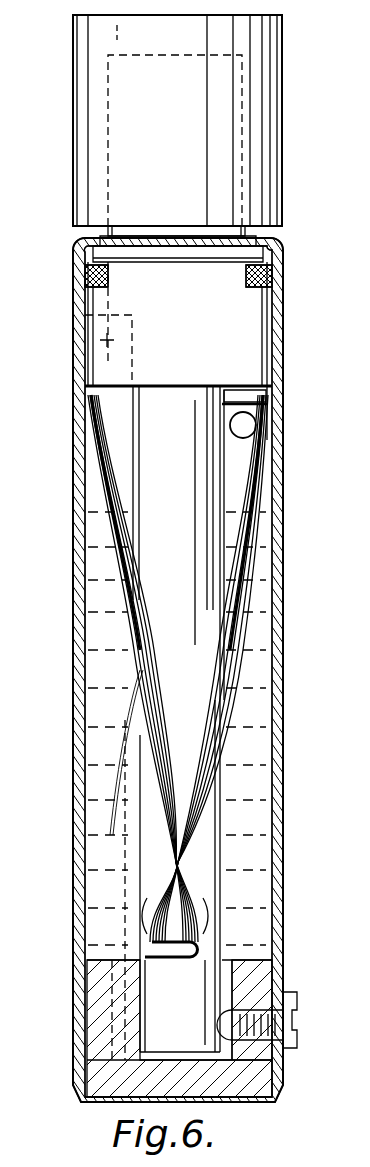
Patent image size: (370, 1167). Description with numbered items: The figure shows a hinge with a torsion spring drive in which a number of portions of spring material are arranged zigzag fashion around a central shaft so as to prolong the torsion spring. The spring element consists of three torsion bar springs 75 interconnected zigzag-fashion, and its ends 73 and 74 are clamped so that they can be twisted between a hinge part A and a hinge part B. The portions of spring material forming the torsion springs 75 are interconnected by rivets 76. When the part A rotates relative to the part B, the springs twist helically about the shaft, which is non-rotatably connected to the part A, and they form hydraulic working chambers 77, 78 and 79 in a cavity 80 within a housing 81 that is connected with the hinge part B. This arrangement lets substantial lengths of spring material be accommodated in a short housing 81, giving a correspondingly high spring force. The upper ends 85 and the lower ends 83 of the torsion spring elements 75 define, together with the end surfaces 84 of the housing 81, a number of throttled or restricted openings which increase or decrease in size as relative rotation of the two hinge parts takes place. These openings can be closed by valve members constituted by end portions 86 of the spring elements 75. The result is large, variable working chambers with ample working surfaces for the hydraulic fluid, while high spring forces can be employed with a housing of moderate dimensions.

The hinge part A is at (284, 70).
The hinge part B is at (282, 870).
The end of spring element 73 is at (100, 337).
The end of spring element 74 is at (118, 1025).
The torsion bar spring 75 is at (212, 822).
The rivet 76 is at (252, 429).
The hydraulic working chamber 77 is at (95, 705).
The hydraulic working chamber 78 is at (148, 522).
The hydraulic working chamber 79 is at (260, 705).
The cavity 80 is at (92, 627).
The housing 81 is at (85, 450).
The lower end of torsion spring element 83 is at (150, 943).
The end surface of housing 84 is at (278, 378).
The upper end of torsion spring element 85 is at (275, 401).
The end portion of spring element 86 is at (150, 965).